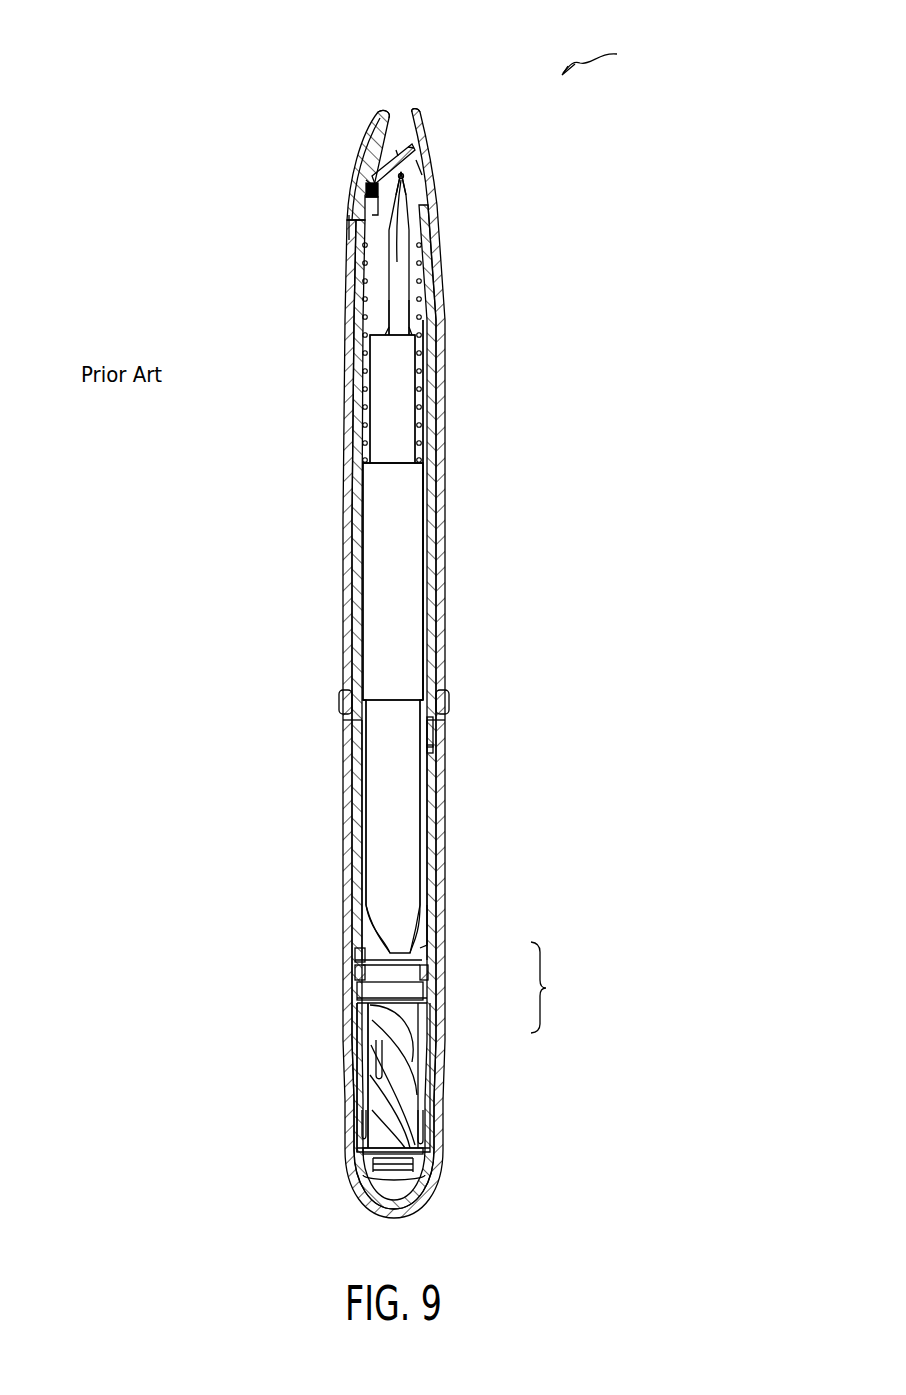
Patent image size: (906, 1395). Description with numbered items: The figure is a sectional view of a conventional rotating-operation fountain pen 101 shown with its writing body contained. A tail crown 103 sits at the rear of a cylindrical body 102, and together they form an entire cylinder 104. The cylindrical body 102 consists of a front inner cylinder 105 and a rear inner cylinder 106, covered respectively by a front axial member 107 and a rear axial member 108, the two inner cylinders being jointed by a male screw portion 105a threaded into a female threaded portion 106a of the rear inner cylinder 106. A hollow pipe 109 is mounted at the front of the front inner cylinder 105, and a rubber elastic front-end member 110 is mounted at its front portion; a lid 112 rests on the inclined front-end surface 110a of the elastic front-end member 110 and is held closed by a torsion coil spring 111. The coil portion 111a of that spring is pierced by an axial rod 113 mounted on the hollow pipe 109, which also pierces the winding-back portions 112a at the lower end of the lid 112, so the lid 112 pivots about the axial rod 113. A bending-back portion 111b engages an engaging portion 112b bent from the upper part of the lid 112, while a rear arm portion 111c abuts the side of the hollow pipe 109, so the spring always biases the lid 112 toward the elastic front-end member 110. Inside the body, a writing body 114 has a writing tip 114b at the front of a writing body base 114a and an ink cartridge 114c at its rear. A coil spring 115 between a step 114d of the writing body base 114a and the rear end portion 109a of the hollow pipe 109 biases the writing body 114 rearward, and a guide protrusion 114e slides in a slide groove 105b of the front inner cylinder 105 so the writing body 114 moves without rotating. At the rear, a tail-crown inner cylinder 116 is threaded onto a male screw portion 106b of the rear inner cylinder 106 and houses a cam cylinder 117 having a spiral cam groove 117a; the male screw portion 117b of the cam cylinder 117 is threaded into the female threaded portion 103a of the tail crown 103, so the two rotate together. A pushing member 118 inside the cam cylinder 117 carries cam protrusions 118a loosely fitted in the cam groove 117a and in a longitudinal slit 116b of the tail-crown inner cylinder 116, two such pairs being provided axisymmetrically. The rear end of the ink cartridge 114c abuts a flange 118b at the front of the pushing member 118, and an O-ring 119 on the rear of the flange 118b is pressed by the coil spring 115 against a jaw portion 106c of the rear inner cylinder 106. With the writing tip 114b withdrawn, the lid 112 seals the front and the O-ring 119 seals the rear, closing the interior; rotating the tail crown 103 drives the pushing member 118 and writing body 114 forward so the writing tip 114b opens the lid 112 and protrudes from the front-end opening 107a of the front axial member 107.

The fountain pen 101 is at (672, 60).
The cylindrical body 102 is at (437, 951).
The tail crown 103 is at (440, 1019).
The female threaded portion 103a is at (420, 1184).
The entire cylinder 104 is at (563, 987).
The front inner cylinder 105 is at (445, 572).
The male screw portion 105a is at (437, 732).
The slide groove 105b is at (430, 607).
The rear inner cylinder 106 is at (432, 803).
The engaging projection 106a is at (437, 748).
The male screw portion 106b is at (350, 960).
The jaw portion 106c is at (428, 920).
The front axial member 107 is at (445, 528).
The front-end opening 107a is at (391, 110).
The rear axial member 108 is at (445, 828).
The hollow pipe 109 is at (412, 205).
The rear end portion 109a is at (412, 280).
The elastic front-end member 110 is at (400, 165).
The cover plate end 110a is at (412, 146).
The torsion coil spring 111 is at (375, 167).
The coil portion 111a is at (372, 183).
The bending-back portion 111b is at (377, 116).
The rear arm portion 111c is at (350, 220).
The lid 112 is at (420, 167).
The winding-back portions 112a is at (364, 193).
The engaging portion 112b is at (396, 152).
The axial rod 113 is at (368, 188).
The writing body 114 is at (372, 534).
The writing body base 114a is at (372, 610).
The writing tip 114b is at (406, 193).
The ink cartridge 114c is at (372, 793).
The step 114d is at (440, 462).
The guide protrusion 114e is at (425, 655).
The coil spring 115 is at (440, 374).
The tail-crown inner cylinder 116 is at (346, 1004).
The slit 116b is at (362, 1113).
The cam cylinder 117 is at (408, 1072).
The spiral cam groove 117a is at (377, 1070).
The male screw portion 117b is at (414, 1158).
The pushing member 118 is at (402, 1108).
The cam protrusion 118a is at (360, 1148).
The flange 118b is at (392, 953).
The O-ring 119 is at (383, 963).